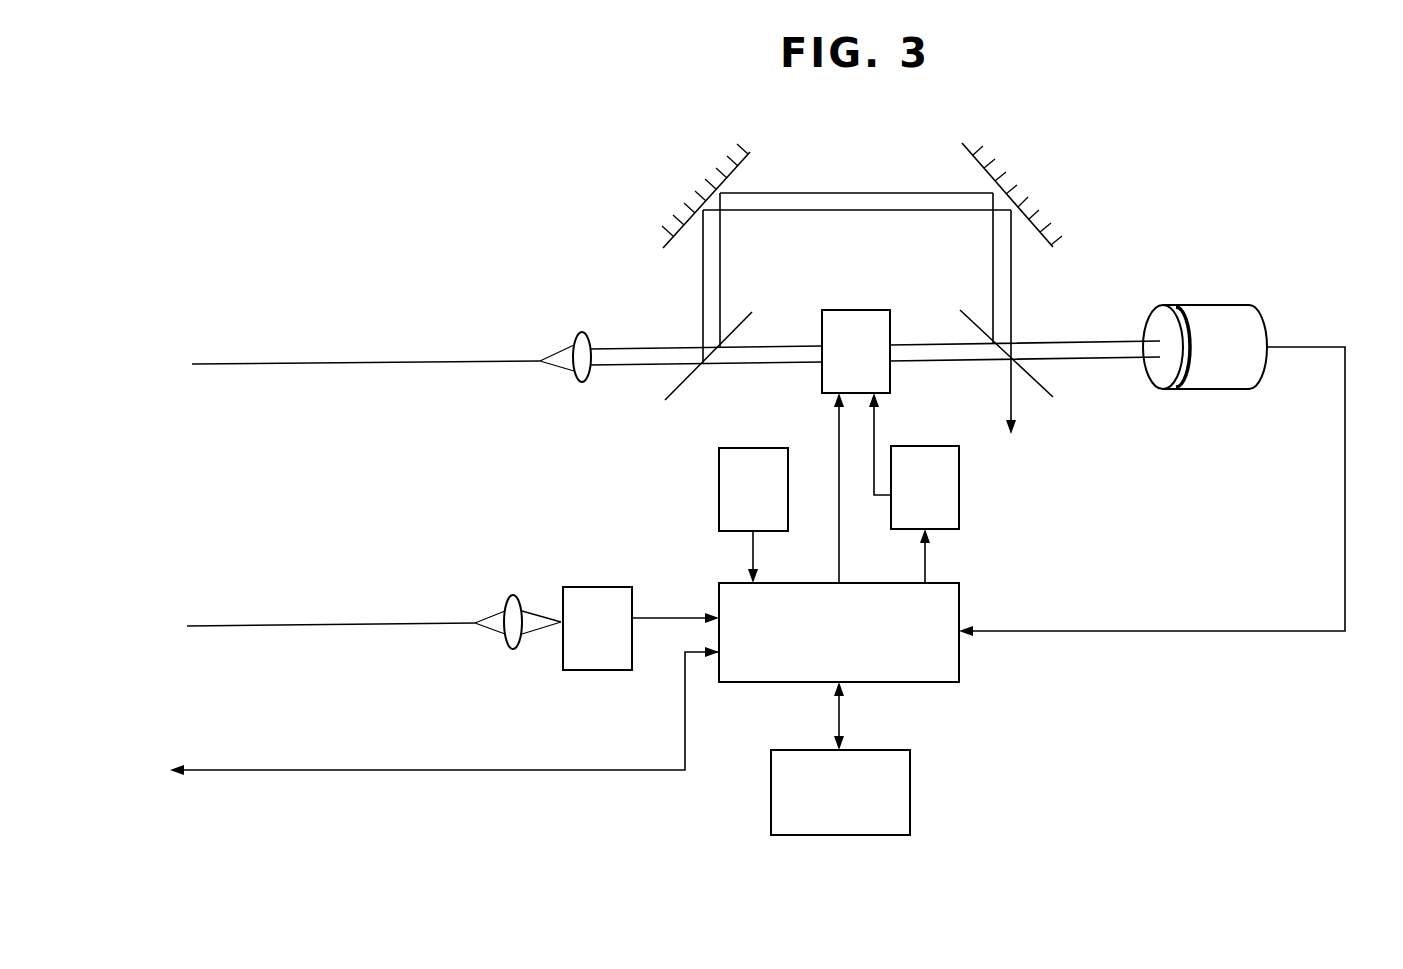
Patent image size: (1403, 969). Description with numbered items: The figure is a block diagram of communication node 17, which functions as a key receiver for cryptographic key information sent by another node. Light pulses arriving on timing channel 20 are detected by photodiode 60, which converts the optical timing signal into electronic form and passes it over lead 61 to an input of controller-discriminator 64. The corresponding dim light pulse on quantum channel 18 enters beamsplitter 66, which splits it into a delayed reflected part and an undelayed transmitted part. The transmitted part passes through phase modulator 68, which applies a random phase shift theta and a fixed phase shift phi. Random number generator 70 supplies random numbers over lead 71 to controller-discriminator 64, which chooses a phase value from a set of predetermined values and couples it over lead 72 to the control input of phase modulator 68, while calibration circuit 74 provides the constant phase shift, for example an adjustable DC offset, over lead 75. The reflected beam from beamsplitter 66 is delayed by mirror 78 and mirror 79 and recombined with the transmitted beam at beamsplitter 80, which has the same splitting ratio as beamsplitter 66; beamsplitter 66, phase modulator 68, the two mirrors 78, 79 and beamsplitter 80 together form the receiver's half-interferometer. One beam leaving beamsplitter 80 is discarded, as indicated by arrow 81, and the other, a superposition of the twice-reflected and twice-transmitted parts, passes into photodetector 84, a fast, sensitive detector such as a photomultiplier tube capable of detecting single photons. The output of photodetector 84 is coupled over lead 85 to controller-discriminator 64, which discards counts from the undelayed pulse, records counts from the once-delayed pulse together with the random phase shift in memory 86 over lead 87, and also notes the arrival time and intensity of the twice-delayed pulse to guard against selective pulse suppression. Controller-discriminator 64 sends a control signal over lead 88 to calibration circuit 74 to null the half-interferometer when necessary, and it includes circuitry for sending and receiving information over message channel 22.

The communication node 17 is at (420, 142).
The quantum channel 18 is at (255, 363).
The timing channel 20 is at (258, 625).
The message channel 22 is at (222, 774).
The photodiode 60 is at (608, 587).
The lead 61 is at (684, 619).
The controller-discriminator 64 is at (944, 672).
The beamsplitter 66 is at (680, 389).
The phase modulator 68 is at (853, 317).
The random number generator 70 is at (719, 497).
The lead 71 is at (755, 553).
The lead 72 is at (838, 441).
The calibration circuit 74 is at (955, 503).
The lead 75 is at (874, 433).
The mirror 78 is at (740, 182).
The mirror 79 is at (966, 170).
The beamsplitter 80 is at (1050, 390).
The arrow 81 is at (1011, 400).
The photodetector 84 is at (1213, 305).
The lead 85 is at (1345, 545).
The memory 86 is at (910, 787).
The lead 87 is at (843, 720).
The lead 88 is at (930, 558).